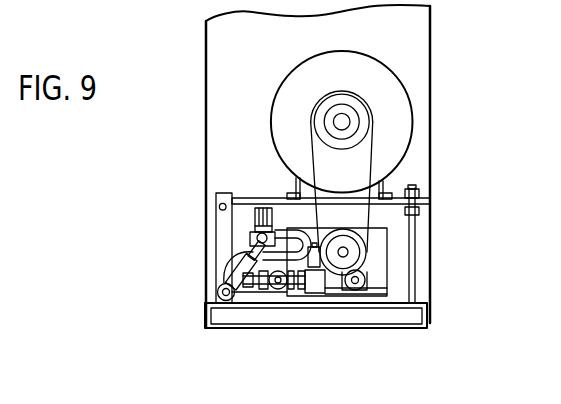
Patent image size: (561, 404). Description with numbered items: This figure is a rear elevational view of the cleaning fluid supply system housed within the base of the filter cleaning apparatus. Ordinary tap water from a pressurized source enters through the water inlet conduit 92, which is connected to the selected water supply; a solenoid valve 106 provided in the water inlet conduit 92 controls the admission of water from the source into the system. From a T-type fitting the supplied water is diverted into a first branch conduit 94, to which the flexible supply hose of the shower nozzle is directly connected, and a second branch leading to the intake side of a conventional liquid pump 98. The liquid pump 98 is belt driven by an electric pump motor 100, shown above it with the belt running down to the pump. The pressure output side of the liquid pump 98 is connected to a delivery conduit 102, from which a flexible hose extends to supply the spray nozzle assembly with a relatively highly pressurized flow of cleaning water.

The electric pump motor 100 is at (285, 108).
The liquid pump 98 is at (380, 243).
The water inlet conduit 92 is at (368, 279).
The first branch conduit 94 is at (278, 290).
The solenoid valve 106 is at (317, 290).
The delivery conduit 102 is at (215, 285).